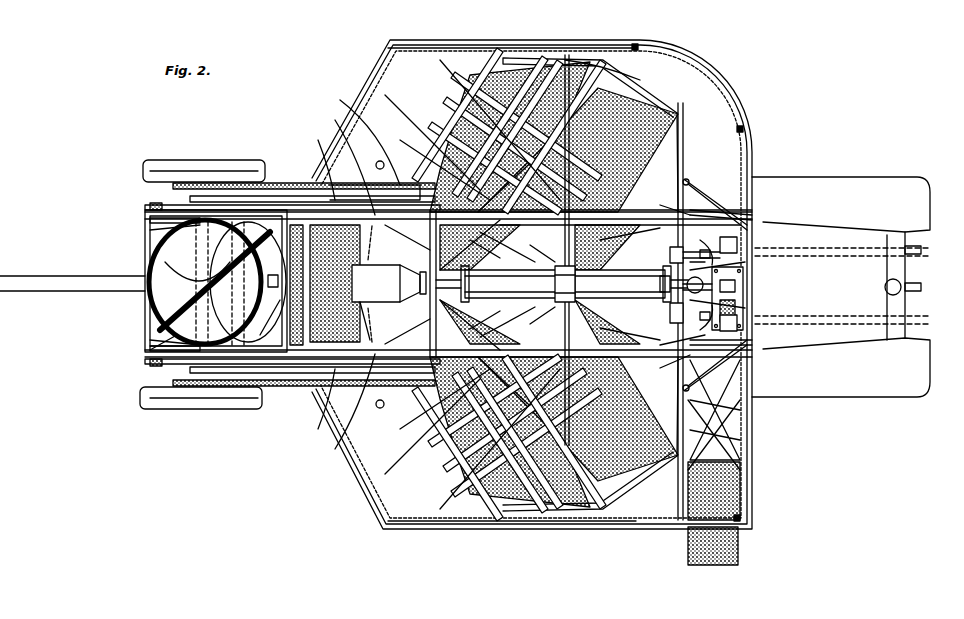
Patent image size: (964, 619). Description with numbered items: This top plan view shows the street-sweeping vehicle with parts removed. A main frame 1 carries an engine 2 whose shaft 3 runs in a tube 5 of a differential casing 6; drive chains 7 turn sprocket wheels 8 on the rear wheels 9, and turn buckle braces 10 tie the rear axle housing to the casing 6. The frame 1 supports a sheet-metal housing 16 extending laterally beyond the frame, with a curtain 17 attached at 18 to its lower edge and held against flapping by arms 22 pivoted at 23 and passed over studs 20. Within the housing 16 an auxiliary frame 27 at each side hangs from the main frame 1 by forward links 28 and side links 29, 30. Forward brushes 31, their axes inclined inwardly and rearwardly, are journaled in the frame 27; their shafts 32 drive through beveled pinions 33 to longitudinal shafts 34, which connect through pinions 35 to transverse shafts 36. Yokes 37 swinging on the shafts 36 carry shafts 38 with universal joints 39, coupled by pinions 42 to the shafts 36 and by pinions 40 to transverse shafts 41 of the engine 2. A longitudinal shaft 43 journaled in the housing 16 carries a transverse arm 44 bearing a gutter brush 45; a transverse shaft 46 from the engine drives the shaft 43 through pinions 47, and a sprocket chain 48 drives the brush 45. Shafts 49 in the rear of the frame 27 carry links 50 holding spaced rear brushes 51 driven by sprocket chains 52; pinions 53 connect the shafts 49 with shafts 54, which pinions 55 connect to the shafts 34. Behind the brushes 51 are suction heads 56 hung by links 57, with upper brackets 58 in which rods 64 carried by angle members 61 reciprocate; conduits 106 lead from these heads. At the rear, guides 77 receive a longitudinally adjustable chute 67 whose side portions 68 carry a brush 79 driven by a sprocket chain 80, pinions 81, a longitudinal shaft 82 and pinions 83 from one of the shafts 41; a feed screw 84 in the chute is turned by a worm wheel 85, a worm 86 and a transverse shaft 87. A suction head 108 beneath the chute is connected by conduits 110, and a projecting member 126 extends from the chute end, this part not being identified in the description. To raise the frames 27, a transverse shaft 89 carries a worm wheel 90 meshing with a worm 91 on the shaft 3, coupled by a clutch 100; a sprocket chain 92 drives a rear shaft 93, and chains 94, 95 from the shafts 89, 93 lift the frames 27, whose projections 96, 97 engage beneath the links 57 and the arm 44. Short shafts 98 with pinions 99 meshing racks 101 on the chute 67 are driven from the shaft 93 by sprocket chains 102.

The main frame 1 is at (666, 370).
The engine 2 is at (770, 300).
The engine shaft 3 is at (703, 265).
The tube 5 is at (625, 300).
The differential casing 6 is at (385, 332).
The drive chains 7 is at (292, 193).
The sprocket wheels 8 is at (170, 190).
The rear wheels 9 is at (225, 165).
The turn buckle braces 10 is at (380, 182).
The housing 16 is at (525, 50).
The curtain 17 is at (668, 66).
The curtain attachment 18 is at (712, 78).
The studs 20 is at (515, 50).
The arms 22 is at (455, 50).
The pivotal mountings 23 is at (586, 62).
The auxiliary frame 27 is at (683, 165).
The forward links 28 is at (712, 206).
The side links 29 is at (580, 100).
The side links 30 is at (500, 80).
The forward brushes 31 is at (680, 118).
The brush shafts 32 is at (530, 255).
The beveled pinions 33 is at (510, 262).
The longitudinal shafts 34 is at (630, 270).
The beveled pinions 35 is at (668, 298).
The transverse shafts 36 is at (668, 234).
The yokes 37 is at (700, 252).
The shafts 38 is at (686, 290).
The universal joints 39 is at (668, 378).
The beveled pinions 40 is at (740, 254).
The transverse shafts 41 is at (720, 258).
The beveled pinions 42 is at (748, 278).
The shaft 43 is at (668, 350).
The arm 44 is at (742, 440).
The gutter brush 45 is at (715, 566).
The shaft 46 is at (745, 292).
The beveled pinions 47 is at (755, 342).
The sprocket chain 48 is at (692, 425).
The shafts 49 is at (445, 90).
The links 50 is at (520, 95).
The rear brushes 51 is at (430, 125).
The sprocket chains 52 is at (450, 100).
The beveled pinions 53 is at (385, 240).
The shafts 54 is at (410, 245).
The beveled pinions 55 is at (470, 304).
The suction heads 56 is at (400, 140).
The links 57 is at (545, 80).
The upper brackets 58 is at (376, 165).
The angle members 61 is at (435, 75).
The rods 64 is at (490, 170).
The chute 67 is at (152, 292).
The side portions 68 is at (322, 170).
The guides 77 is at (145, 235).
The brush 79 is at (340, 292).
The sprocket chain 80 is at (350, 270).
The beveled pinions 81 is at (432, 260).
The shaft 82 is at (630, 222).
The beveled pinions 83 is at (752, 220).
The feed screw 84 is at (152, 352).
The worm wheel 85 is at (268, 278).
The worm 86 is at (263, 318).
The transverse shaft 87 is at (276, 245).
The shaft 89 is at (620, 200).
The worm wheel 90 is at (600, 232).
The worm 91 is at (585, 296).
The sprocket chain 92 is at (545, 92).
The transverse shaft 93 is at (348, 104).
The chains 94 is at (600, 68).
The chains 95 is at (567, 60).
The projections 96 is at (540, 120).
The projection 97 is at (700, 468).
The short shafts 98 is at (148, 207).
The pinions 99 is at (150, 222).
The clutch 100 is at (628, 298).
The racks 101 is at (150, 232).
The sprocket chains 102 is at (200, 160).
The conduits 106 is at (350, 125).
The suction head 108 is at (205, 268).
The conduits 110 is at (262, 180).
The shaft 126 is at (12, 276).